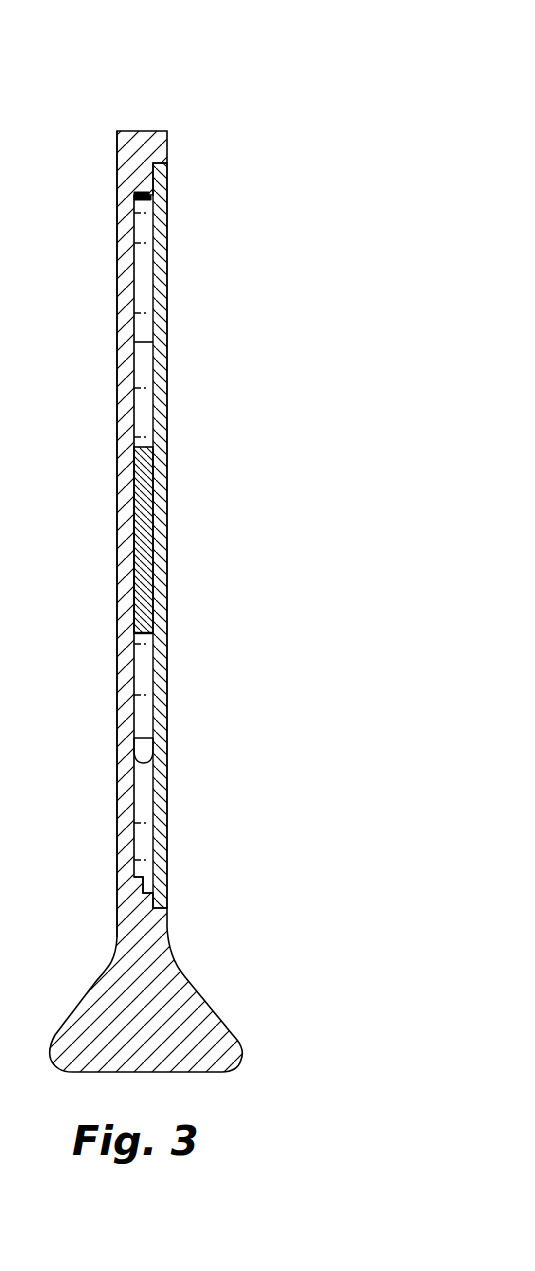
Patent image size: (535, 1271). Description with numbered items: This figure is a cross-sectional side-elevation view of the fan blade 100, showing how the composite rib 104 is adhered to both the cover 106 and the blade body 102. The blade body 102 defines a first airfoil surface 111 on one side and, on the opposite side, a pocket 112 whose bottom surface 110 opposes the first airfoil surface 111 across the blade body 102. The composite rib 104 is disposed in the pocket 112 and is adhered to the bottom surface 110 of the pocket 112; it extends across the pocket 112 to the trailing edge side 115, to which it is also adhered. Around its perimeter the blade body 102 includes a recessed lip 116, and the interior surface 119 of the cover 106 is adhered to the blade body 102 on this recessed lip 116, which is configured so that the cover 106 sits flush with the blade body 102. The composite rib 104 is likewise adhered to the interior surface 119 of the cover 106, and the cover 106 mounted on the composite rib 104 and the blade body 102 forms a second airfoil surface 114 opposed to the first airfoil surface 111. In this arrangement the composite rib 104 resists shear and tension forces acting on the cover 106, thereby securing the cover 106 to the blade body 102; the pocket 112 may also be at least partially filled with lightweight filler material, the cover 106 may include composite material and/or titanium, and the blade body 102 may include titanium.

The fan blade 100 is at (191, 547).
The blade body 102 is at (109, 173).
The composite rib 104 is at (143, 493).
The cover 106 is at (165, 298).
The bottom surface 110 is at (147, 757).
The first airfoil surface 111 is at (116, 628).
The pocket 112 is at (142, 810).
The second airfoil surface 114 is at (167, 378).
The trailing edge side 115 is at (139, 285).
The recessed lip 116 is at (153, 183).
The interior surface 119 is at (150, 893).